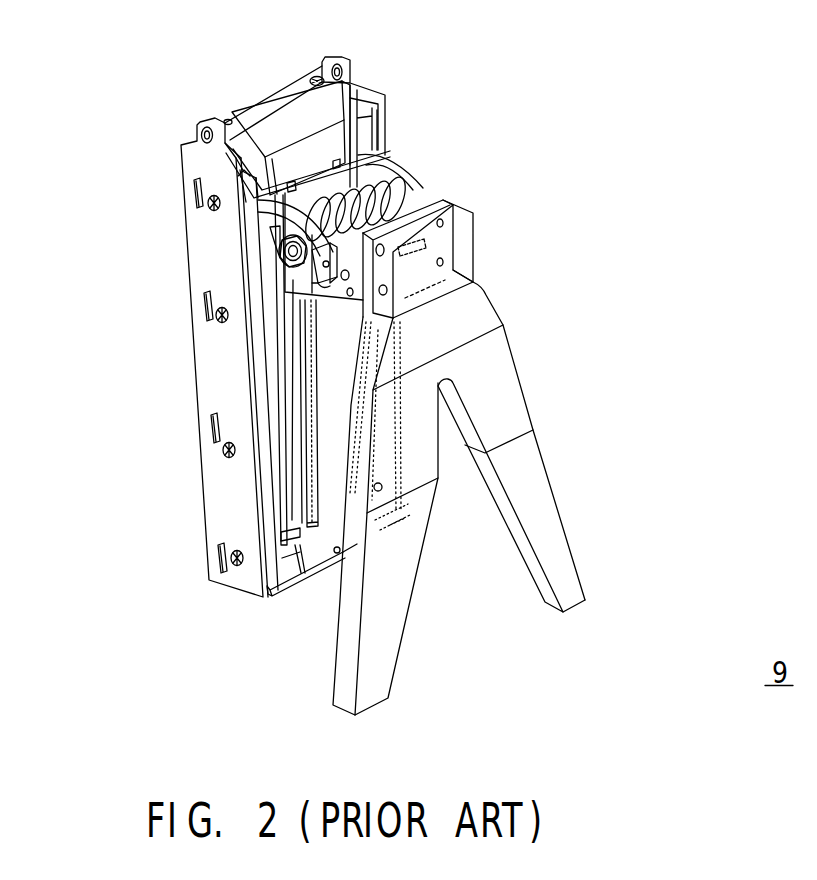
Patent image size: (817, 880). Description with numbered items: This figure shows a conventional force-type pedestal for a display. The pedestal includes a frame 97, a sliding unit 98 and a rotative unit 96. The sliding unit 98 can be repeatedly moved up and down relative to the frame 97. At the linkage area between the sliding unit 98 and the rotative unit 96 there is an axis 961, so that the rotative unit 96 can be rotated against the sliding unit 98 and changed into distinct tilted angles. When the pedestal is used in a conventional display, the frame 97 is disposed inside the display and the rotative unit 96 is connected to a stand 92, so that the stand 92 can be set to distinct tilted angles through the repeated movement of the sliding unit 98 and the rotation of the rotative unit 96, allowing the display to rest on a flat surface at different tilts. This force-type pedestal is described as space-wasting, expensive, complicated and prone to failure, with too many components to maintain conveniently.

The stand 92 is at (542, 527).
The rotative unit 96 is at (352, 292).
The axis 961 is at (280, 260).
The frame 97 is at (205, 227).
The sliding unit 98 is at (315, 153).